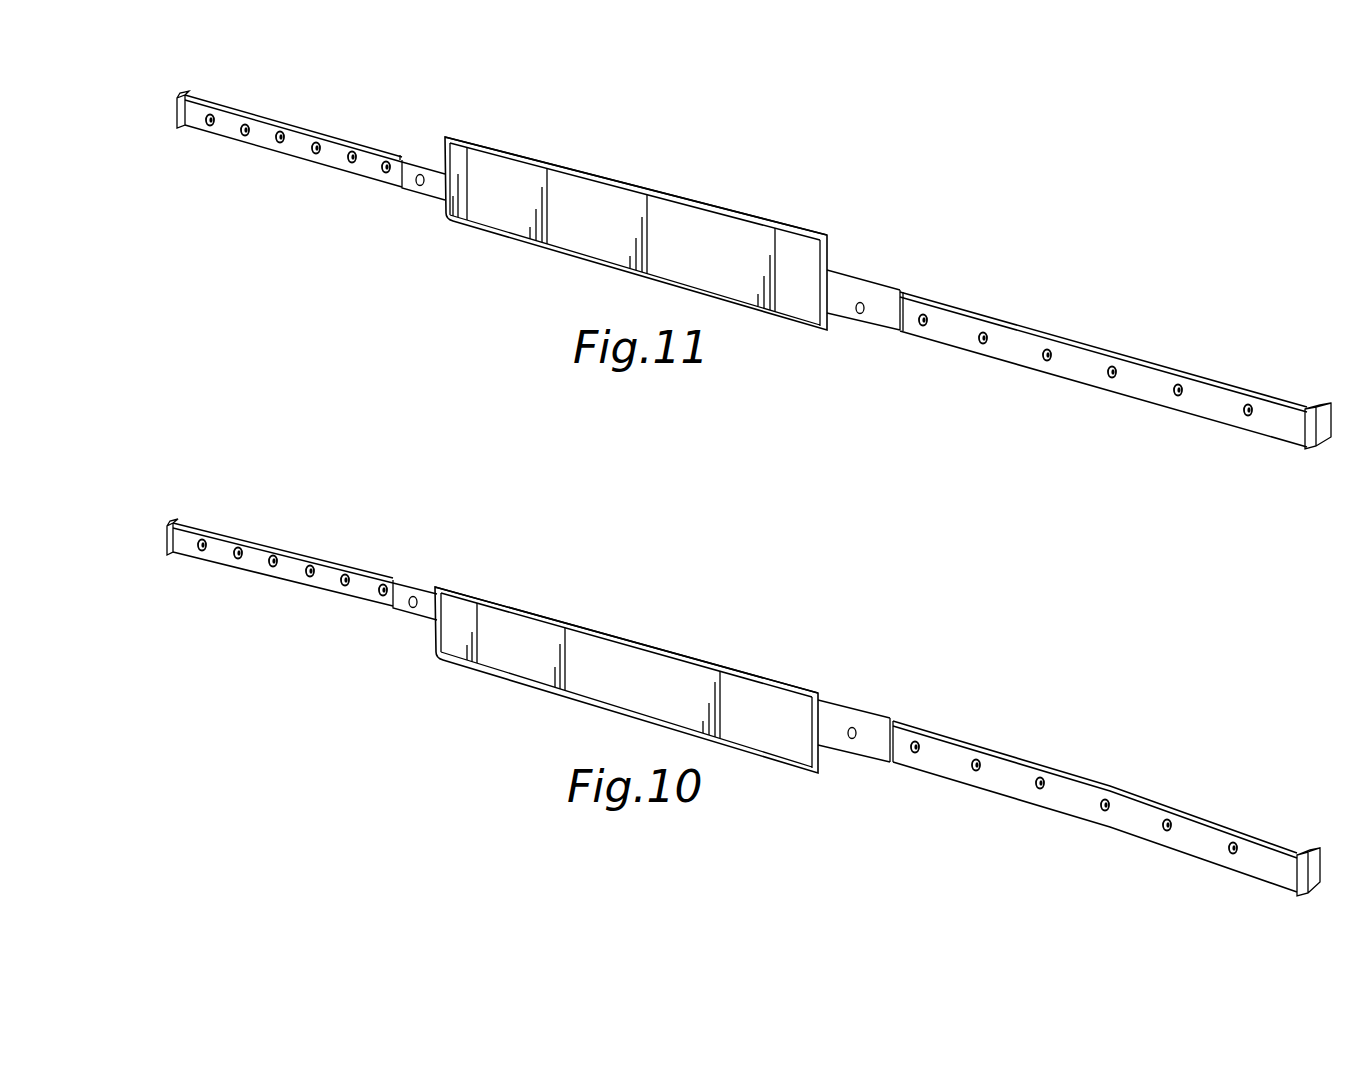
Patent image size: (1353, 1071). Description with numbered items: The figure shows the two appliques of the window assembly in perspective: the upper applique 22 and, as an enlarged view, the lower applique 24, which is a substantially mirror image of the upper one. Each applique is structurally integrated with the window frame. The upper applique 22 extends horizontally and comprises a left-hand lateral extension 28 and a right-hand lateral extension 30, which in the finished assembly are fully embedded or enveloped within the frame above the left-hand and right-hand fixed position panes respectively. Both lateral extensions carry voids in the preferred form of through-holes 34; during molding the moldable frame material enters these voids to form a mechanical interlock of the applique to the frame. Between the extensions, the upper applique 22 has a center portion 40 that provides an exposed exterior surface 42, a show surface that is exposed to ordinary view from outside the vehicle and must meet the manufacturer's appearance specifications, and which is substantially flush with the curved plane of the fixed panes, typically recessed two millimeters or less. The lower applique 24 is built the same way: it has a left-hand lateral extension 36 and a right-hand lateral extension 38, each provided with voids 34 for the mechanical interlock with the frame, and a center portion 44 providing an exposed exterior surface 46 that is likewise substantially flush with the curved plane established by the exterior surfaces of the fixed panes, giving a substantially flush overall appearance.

In FIG. 10, the upper applique 22 is at (626, 666).
In FIG. 11, the lower applique 24 is at (636, 224).
In FIG. 10, the left-hand lateral extension 28 is at (333, 560).
In FIG. 10, the right-hand lateral extension 30 is at (978, 742).
In FIG. 11, the through-holes 34 is at (208, 116).
In FIG. 10, the through-holes 34 is at (206, 540).
In FIG. 11, the left-hand lateral extension 36 is at (312, 128).
In FIG. 11, the right-hand lateral extension 38 is at (1042, 330).
In FIG. 10, the center portion 40 is at (748, 670).
In FIG. 10, the exposed exterior surface 42 is at (652, 700).
In FIG. 11, the center portion 44 is at (742, 208).
In FIG. 11, the exposed exterior surface 46 is at (724, 260).